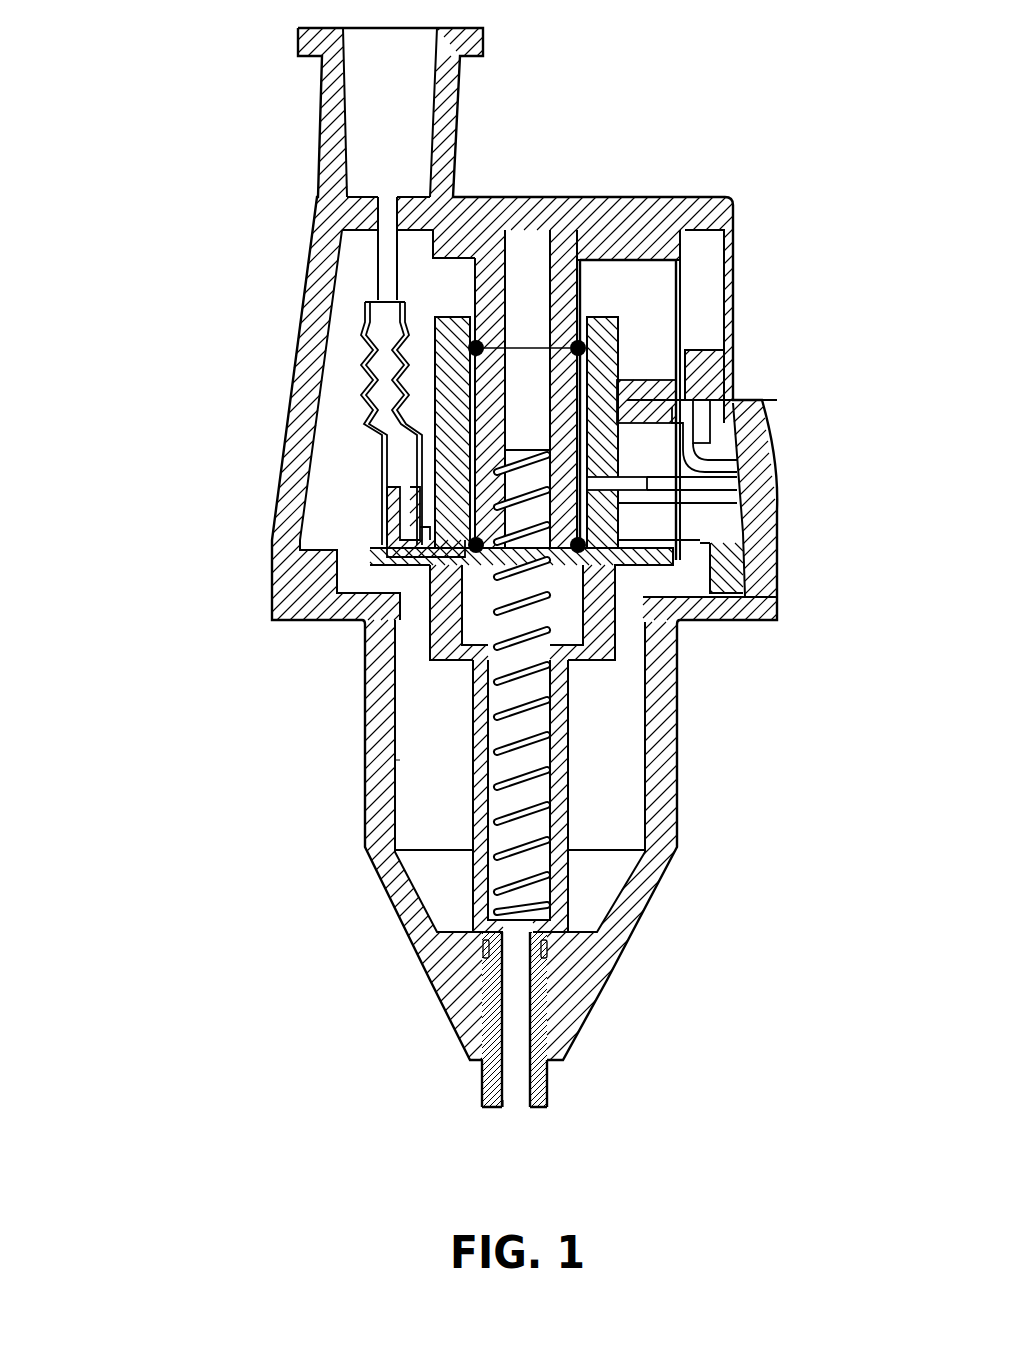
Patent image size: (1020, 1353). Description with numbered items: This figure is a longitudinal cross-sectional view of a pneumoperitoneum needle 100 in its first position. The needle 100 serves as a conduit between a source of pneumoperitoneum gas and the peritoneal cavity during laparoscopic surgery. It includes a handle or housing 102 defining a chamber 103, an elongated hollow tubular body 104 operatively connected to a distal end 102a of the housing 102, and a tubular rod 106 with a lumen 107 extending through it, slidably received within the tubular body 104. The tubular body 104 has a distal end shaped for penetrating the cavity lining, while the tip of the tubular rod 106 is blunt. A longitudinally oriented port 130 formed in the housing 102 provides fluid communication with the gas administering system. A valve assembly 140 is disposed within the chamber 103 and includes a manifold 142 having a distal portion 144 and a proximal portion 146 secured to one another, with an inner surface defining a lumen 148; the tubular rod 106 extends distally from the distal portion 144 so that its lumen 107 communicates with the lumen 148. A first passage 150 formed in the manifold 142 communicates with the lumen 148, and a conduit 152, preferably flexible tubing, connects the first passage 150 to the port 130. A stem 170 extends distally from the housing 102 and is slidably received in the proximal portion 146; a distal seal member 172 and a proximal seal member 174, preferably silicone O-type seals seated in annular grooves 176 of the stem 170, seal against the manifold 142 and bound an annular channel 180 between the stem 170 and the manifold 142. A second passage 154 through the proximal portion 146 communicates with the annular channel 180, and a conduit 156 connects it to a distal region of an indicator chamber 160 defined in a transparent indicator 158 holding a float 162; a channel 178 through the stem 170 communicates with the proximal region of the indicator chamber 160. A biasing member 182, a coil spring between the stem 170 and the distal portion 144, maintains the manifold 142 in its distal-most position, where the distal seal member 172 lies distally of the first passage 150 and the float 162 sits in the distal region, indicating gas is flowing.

The pneumoperitoneum needle 100 is at (132, 166).
The housing 102 is at (275, 446).
The distal end of housing 102a is at (633, 927).
The chamber 103 is at (417, 725).
The tubular body 104 is at (545, 1097).
The tubular rod 106 is at (607, 975).
The lumen 107 is at (513, 1100).
The port 130 is at (388, 248).
The valve assembly 140 is at (603, 673).
The manifold 142 is at (576, 752).
The distal portion 144 is at (470, 792).
The proximal portion 146 is at (640, 528).
The lumen 148 is at (568, 627).
The first passage 150 is at (380, 535).
The conduit 152 is at (372, 372).
The second passage 154 is at (752, 450).
The conduit 156 is at (705, 500).
The indicator 158 is at (745, 252).
The indicator chamber 160 is at (727, 203).
The float 162 is at (712, 378).
The stem 170 is at (492, 253).
The distal seal member 172 is at (600, 543).
The proximal seal member 174 is at (613, 317).
The annular grooves 176 is at (570, 333).
The channel 178 is at (530, 240).
The annular channel 180 is at (622, 332).
The biasing member 182 is at (470, 878).